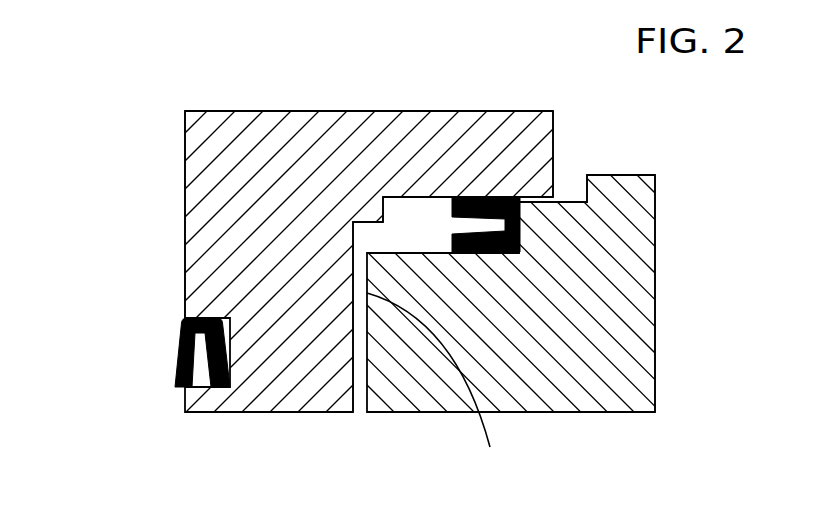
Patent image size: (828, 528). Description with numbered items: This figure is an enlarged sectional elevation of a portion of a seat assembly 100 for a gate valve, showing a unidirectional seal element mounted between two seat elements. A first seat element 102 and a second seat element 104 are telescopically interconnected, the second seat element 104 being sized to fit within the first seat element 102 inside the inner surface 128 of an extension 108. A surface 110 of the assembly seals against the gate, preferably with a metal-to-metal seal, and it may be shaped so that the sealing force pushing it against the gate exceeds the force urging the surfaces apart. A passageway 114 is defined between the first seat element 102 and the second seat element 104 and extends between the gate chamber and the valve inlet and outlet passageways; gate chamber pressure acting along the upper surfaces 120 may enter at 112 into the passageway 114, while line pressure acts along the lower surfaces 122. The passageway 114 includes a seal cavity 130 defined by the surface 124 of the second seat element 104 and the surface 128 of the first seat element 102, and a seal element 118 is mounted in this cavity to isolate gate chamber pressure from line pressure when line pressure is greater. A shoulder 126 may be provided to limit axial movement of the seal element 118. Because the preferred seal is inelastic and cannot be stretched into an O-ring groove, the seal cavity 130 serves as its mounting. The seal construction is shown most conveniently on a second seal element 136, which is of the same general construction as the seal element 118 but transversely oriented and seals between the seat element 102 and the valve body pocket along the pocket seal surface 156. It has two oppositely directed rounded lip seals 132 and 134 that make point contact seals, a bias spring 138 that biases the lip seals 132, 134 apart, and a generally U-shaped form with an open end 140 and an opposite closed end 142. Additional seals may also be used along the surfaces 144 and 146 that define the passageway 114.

The seat assembly 100 is at (120, 100).
The first seat element 102 is at (248, 137).
The second seat element 104 is at (633, 307).
The extension 108 is at (518, 150).
The surface 110 is at (653, 358).
The pressure entry point 112 is at (573, 162).
The passageway 114 is at (360, 395).
The seal element 118 is at (521, 226).
The upper surfaces 120 is at (293, 110).
The lower surfaces 122 is at (555, 413).
The surface 124 is at (520, 254).
The shoulder 126 is at (360, 197).
The inner surface 128 is at (474, 197).
The seal cavity 130 is at (403, 213).
The lip seal 132 is at (180, 380).
The lip seal 134 is at (230, 383).
The seal element 136 is at (183, 337).
The bias spring 138 is at (470, 220).
The open end 140 is at (193, 390).
The closed end 142 is at (207, 316).
The surface 144 is at (352, 268).
The surface 146 is at (442, 390).
The pocket seal surface 156 is at (185, 175).